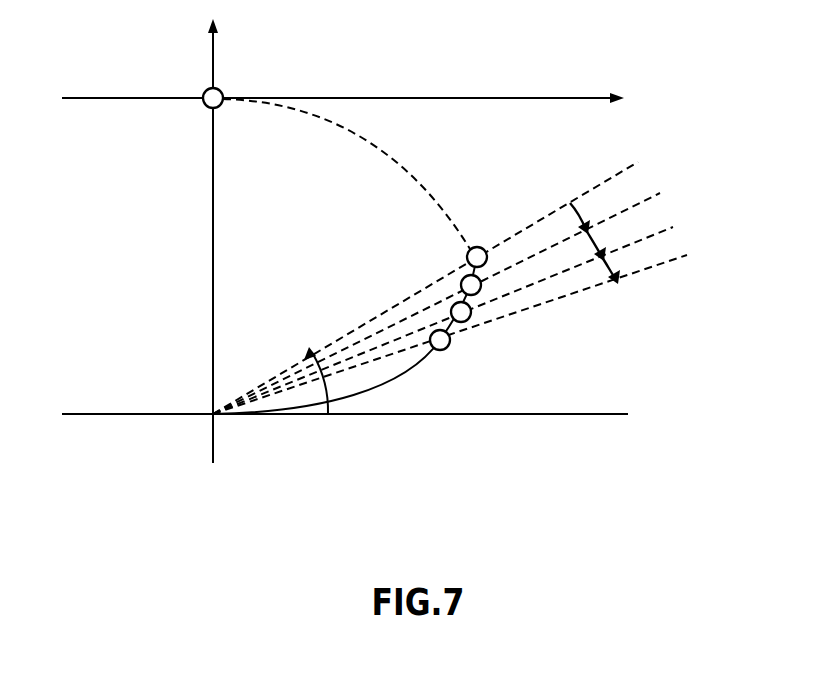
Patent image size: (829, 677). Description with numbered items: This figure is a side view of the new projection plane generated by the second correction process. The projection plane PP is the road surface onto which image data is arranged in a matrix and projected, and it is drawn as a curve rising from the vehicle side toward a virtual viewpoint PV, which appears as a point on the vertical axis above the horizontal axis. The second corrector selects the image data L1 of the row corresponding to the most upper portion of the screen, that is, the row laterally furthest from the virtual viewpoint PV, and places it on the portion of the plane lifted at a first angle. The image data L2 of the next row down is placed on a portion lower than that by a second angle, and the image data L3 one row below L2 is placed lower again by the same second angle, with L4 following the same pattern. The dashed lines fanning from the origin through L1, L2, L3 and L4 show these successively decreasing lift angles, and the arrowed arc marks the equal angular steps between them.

The virtual viewpoint PV is at (221, 90).
The projection plane PP is at (390, 378).
The image data of the most upper row L1 is at (478, 247).
The image data of the second upper row L2 is at (482, 291).
The image data of the third upper row L3 is at (469, 320).
The fourth candidate line L4 is at (447, 349).